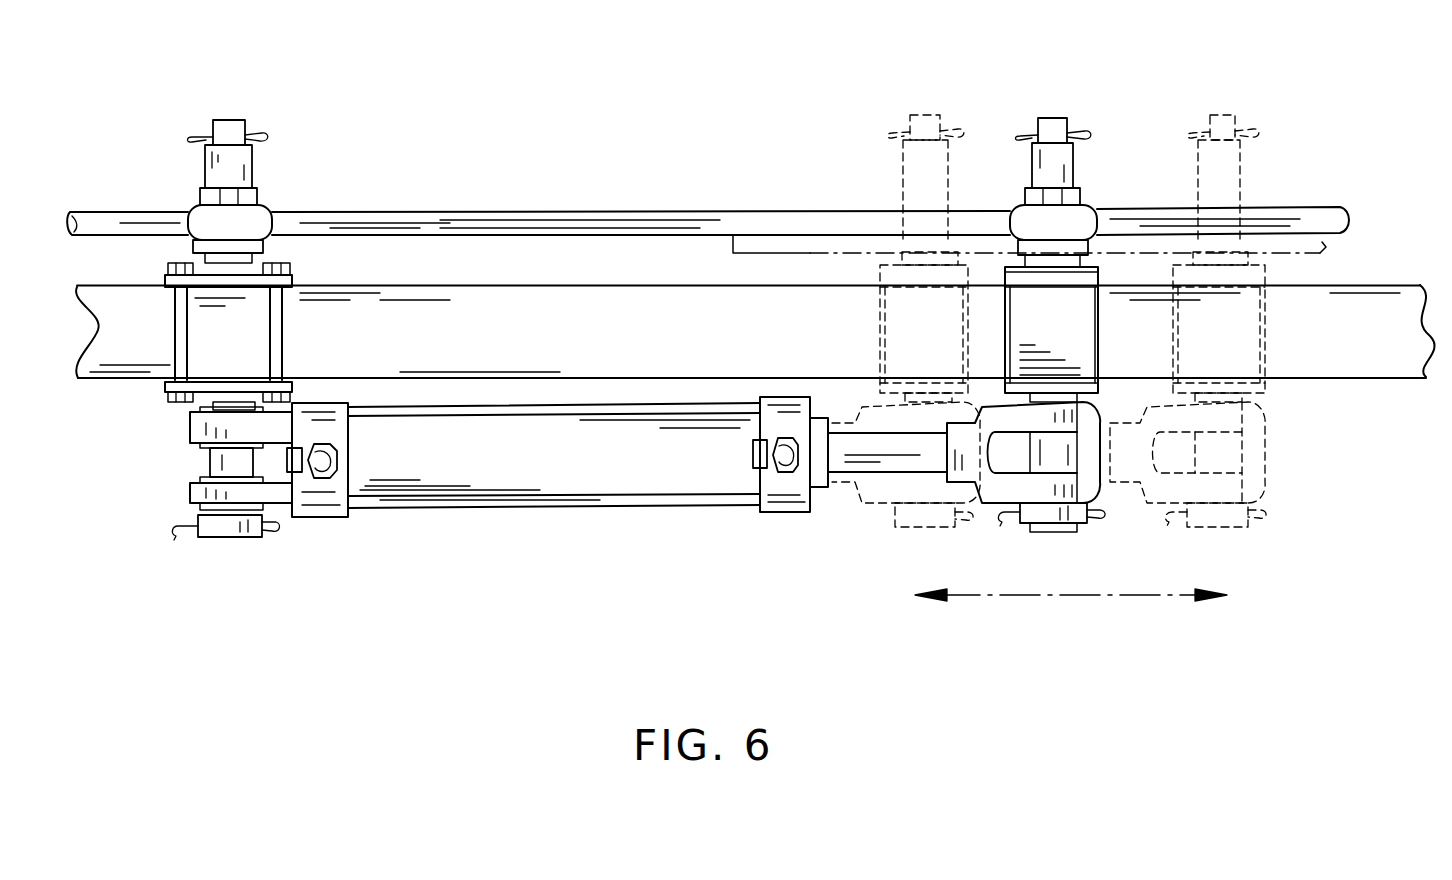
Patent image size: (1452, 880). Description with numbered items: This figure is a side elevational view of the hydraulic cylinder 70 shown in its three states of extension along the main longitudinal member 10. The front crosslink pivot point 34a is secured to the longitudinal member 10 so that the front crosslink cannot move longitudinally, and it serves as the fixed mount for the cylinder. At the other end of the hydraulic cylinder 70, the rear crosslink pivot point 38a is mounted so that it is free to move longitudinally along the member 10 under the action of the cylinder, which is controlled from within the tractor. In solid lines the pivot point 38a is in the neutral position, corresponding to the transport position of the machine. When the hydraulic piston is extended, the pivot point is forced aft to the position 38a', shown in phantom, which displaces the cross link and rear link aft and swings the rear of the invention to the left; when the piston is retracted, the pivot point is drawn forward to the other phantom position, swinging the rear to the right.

The main longitudinal member 10 is at (490, 305).
The pivot point of front crosslink 34a is at (235, 120).
The pivot point of rear crosslink 38a is at (1038, 285).
The extended position of pivot point 38a' is at (1234, 283).
The hydraulic cylinder 70 is at (668, 470).